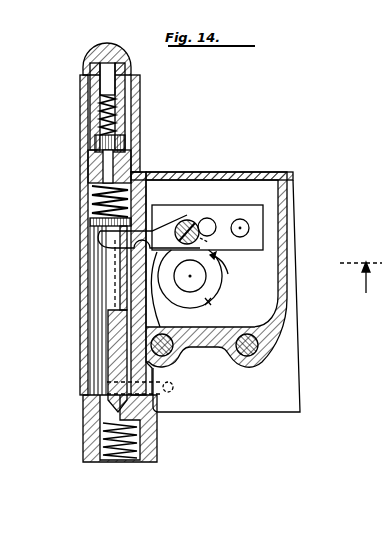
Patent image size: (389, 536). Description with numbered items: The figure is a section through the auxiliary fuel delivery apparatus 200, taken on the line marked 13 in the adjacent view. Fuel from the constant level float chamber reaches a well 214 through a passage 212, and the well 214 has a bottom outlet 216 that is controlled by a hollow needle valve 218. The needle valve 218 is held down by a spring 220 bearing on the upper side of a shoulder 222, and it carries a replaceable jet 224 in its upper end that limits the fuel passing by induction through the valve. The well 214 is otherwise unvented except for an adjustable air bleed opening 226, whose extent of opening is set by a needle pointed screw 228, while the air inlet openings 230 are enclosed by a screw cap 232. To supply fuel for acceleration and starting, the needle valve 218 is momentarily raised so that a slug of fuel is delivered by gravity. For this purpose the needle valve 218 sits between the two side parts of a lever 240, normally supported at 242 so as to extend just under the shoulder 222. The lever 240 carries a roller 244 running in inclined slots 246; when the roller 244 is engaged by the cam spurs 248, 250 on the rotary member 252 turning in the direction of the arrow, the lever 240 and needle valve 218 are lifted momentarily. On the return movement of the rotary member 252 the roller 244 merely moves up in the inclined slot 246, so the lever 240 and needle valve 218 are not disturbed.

The fuel delivery apparatus 200 is at (300, 346).
The passage 212 is at (173, 389).
The well 214 is at (152, 374).
The bottom outlet 216 is at (115, 412).
The hollow needle valve 218 is at (108, 332).
The spring 220 is at (141, 176).
The shoulder 222 is at (90, 220).
The replaceable jet 224 is at (88, 172).
The adjustable air bleed opening 226 is at (98, 152).
The needle pointed screw 228 is at (79, 82).
The air inlet openings 230 is at (122, 120).
The screw cap 232 is at (112, 44).
The lever 240 is at (102, 238).
The lever support 242 is at (176, 302).
The roller 244 is at (184, 222).
The inclined slots 246 is at (205, 218).
The cam spur 248 is at (205, 238).
The cam spur 250 is at (229, 271).
The rotary member 252 is at (211, 302).
The section line for FIG. 13 view 13 is at (361, 269).